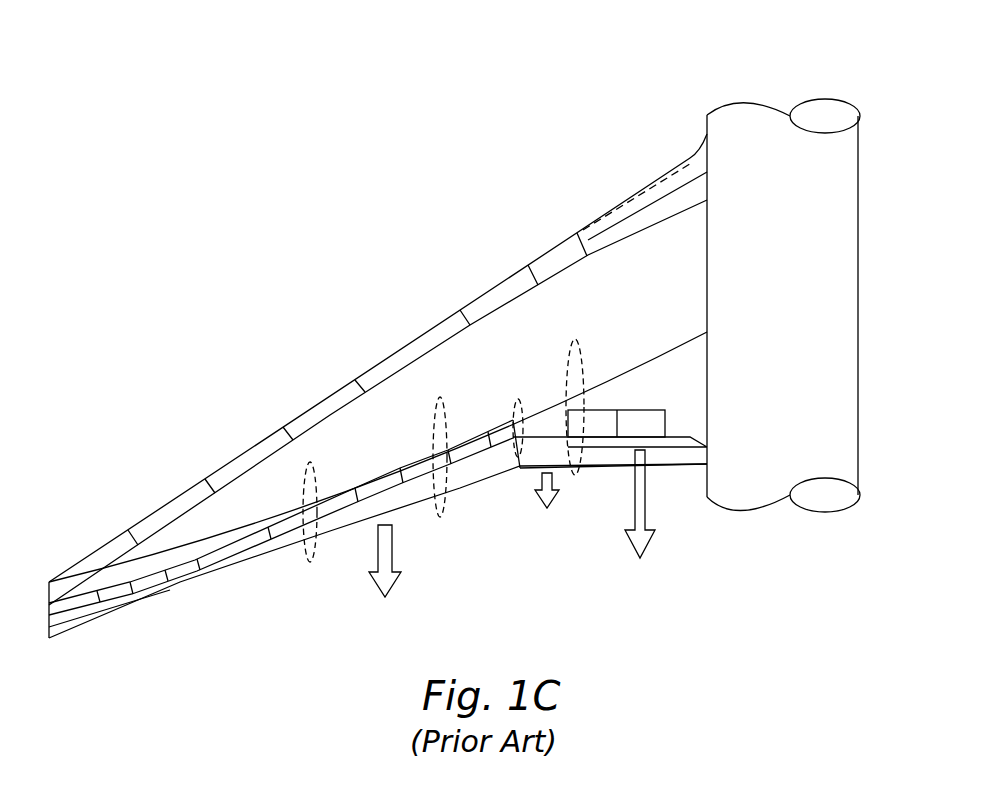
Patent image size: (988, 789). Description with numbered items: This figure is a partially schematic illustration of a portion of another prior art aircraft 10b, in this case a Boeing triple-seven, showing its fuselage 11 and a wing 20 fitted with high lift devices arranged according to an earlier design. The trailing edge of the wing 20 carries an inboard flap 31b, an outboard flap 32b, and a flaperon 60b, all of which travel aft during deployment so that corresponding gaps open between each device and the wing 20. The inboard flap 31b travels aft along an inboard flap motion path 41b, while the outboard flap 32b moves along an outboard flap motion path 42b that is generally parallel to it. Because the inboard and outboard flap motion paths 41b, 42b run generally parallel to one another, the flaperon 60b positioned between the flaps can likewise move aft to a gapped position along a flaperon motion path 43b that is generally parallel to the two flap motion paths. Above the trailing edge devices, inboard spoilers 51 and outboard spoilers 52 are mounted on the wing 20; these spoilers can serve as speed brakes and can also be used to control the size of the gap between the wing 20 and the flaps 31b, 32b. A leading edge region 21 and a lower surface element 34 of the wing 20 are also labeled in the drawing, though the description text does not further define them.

The aircraft 10b is at (790, 84).
The fuselage 11 is at (852, 170).
The wing 20 is at (147, 390).
The leading edge spar 21 is at (232, 468).
The inboard flap 31b is at (678, 470).
The outboard flap 32b is at (240, 557).
The bottom skin 34 is at (117, 605).
The inboard flap motion path 41b is at (643, 555).
The outboard flap motion path 42b is at (372, 592).
The flaperon motion path 43b is at (535, 505).
The inboard spoilers 51 is at (647, 420).
The outboard spoilers 52 is at (287, 520).
The flaperon 60b is at (572, 465).